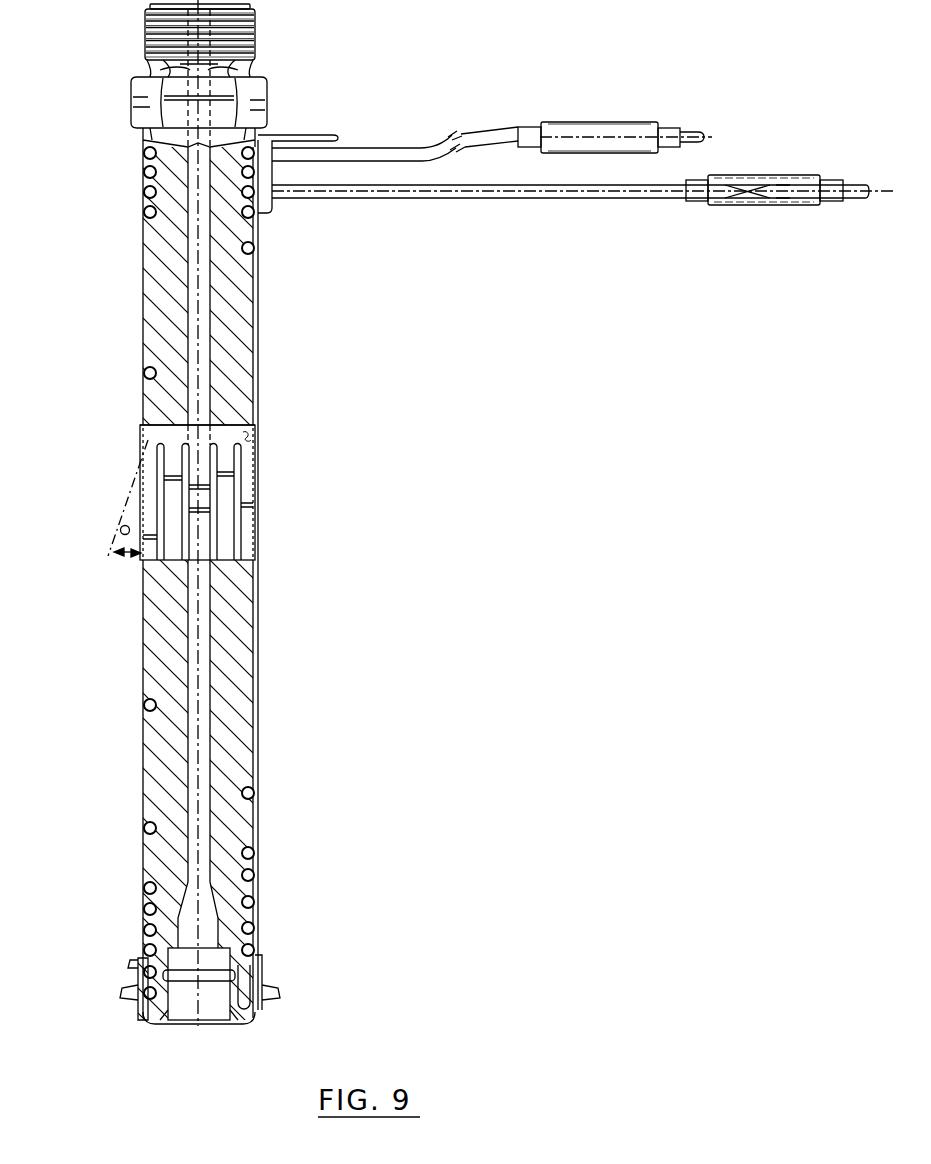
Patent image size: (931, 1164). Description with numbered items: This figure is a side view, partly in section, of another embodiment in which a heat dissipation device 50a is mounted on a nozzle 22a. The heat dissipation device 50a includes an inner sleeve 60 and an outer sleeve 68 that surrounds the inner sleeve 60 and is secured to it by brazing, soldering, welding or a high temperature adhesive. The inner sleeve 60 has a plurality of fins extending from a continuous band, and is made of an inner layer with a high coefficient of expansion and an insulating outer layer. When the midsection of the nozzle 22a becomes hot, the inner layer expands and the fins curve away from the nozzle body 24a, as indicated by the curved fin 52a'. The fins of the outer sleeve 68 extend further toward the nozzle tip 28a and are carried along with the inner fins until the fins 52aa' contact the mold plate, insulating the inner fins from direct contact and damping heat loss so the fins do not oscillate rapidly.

The nozzle 22a is at (303, 717).
The nozzle body 24a is at (150, 598).
The nozzle tip 28a is at (155, 1024).
The heat dissipation device 50a is at (274, 442).
The fin 52a' is at (73, 529).
The fins 52aa' is at (79, 498).
The inner sleeve 60 is at (255, 477).
The outer sleeve 68 is at (143, 437).